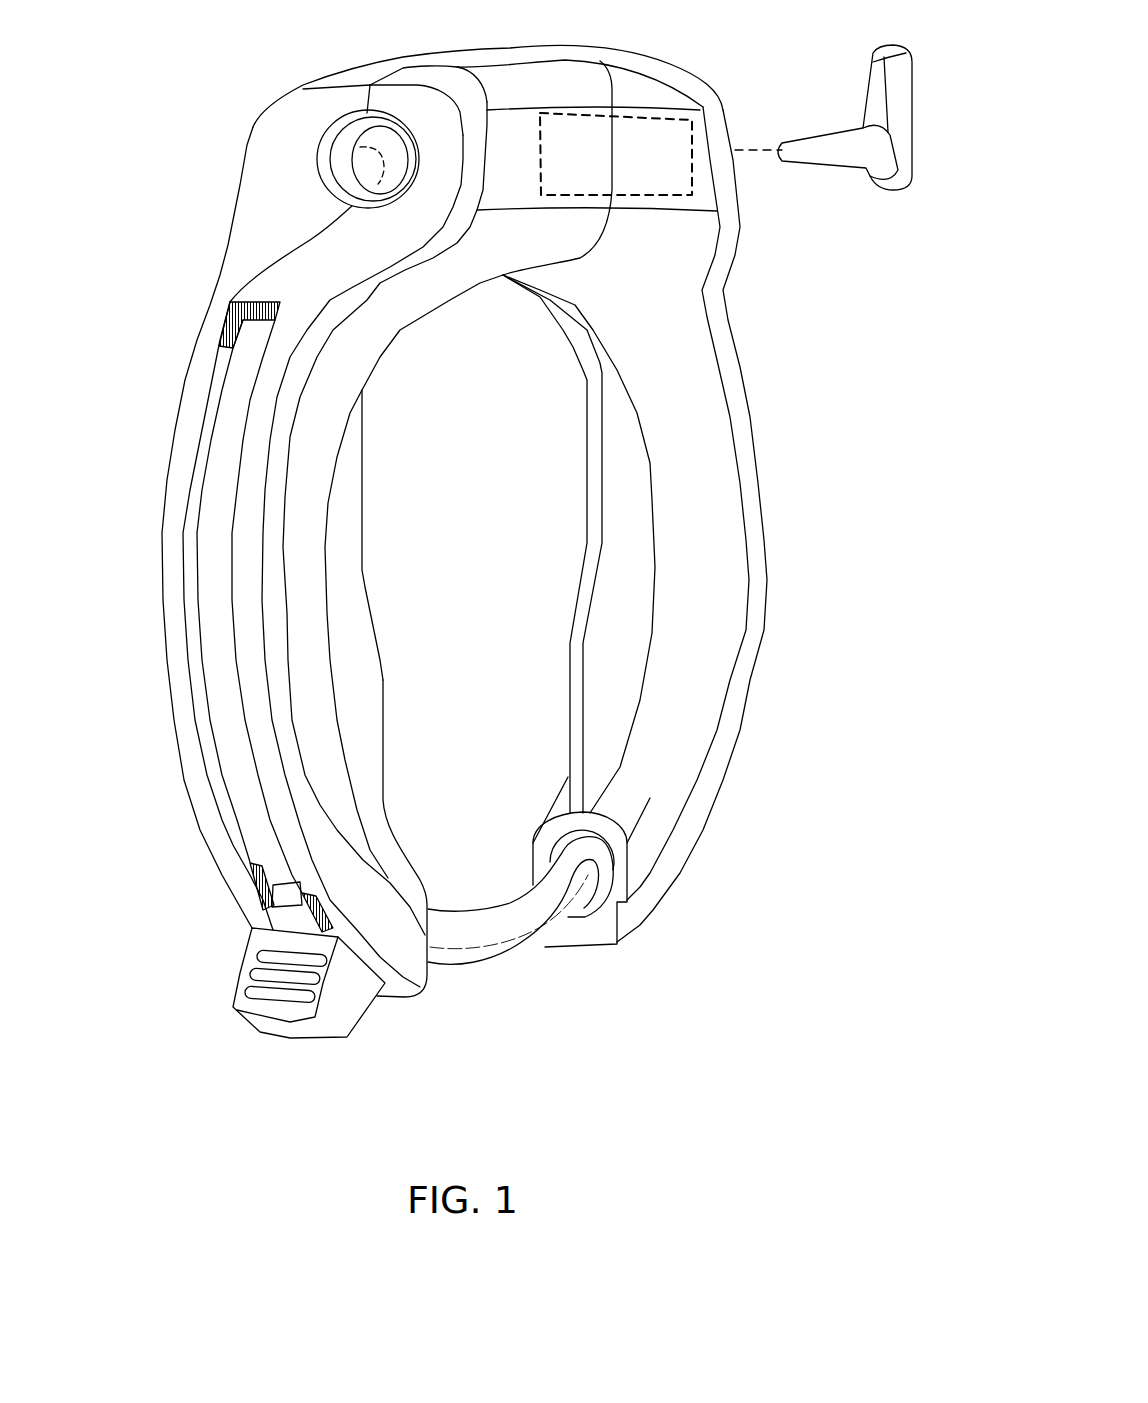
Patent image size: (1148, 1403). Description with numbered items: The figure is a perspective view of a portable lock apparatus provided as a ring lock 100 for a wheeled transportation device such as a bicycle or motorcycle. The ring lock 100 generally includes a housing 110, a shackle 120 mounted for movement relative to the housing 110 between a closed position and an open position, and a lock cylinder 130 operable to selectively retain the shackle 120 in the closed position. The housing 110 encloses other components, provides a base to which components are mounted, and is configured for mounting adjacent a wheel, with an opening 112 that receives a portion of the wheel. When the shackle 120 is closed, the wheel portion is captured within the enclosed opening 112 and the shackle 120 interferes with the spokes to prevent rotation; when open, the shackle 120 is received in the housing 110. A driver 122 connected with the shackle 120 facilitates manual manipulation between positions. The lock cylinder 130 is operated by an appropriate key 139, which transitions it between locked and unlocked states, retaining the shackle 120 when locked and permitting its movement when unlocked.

The ring lock 100 is at (133, 106).
The housing 110 is at (230, 240).
The opening 112 is at (434, 838).
The shackle 120 is at (532, 976).
The driver 122 is at (277, 1040).
The lock cylinder 130 is at (540, 110).
The key 139 is at (816, 110).